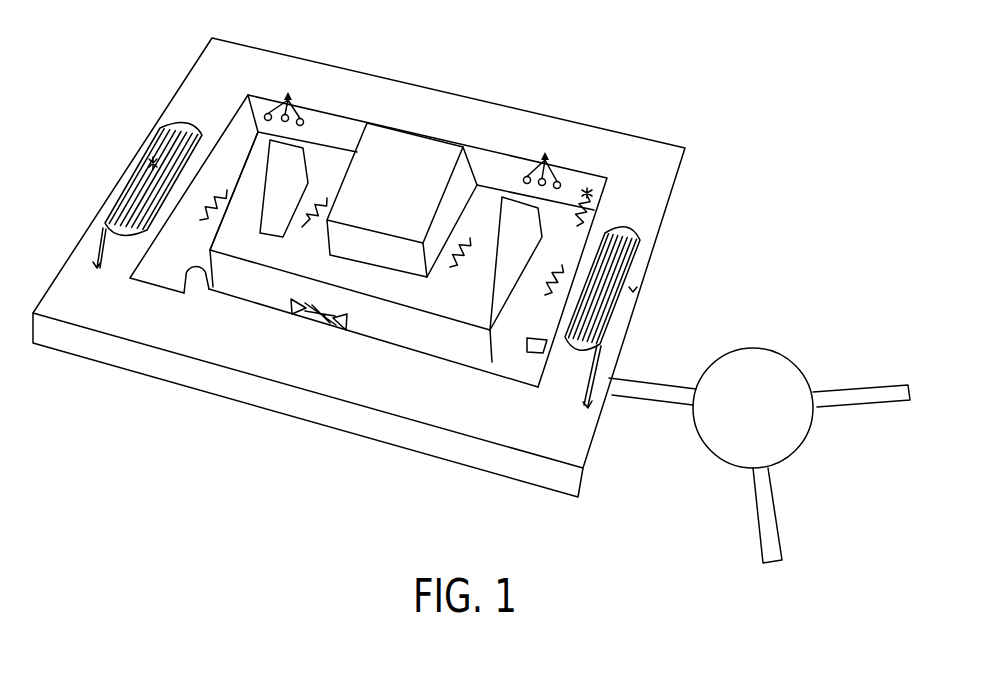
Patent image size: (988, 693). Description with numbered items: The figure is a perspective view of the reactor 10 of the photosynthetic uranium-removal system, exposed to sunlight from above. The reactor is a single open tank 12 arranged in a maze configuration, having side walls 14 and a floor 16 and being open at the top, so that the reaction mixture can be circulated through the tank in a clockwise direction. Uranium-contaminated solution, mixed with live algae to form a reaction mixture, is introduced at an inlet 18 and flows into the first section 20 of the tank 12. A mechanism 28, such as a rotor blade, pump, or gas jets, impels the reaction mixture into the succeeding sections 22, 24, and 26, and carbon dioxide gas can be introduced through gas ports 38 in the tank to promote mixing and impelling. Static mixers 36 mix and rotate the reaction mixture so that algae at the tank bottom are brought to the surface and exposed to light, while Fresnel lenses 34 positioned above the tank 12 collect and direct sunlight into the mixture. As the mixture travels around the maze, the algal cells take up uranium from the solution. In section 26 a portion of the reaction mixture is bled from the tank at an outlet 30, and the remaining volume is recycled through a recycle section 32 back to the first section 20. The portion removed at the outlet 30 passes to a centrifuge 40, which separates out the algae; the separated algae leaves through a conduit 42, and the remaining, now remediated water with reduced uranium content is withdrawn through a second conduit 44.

The reactor 10 is at (532, 70).
The tank 12 is at (567, 205).
The side walls 14 is at (337, 127).
The floor 16 is at (328, 175).
The inlet 18 is at (193, 283).
The first section 20 is at (248, 165).
The succeeding section 22 is at (347, 163).
The succeeding section 24 is at (472, 232).
The section 26 is at (550, 253).
The mechanism 28 is at (593, 192).
The outlet 30 is at (537, 350).
The recycle section 32 is at (390, 322).
The Fresnel lenses 34 is at (153, 175).
The static mixers 36 is at (200, 222).
The gas ports 38 is at (288, 92).
The centrifuge 40 is at (757, 365).
The conduit 42 is at (882, 392).
The second conduit 44 is at (768, 527).